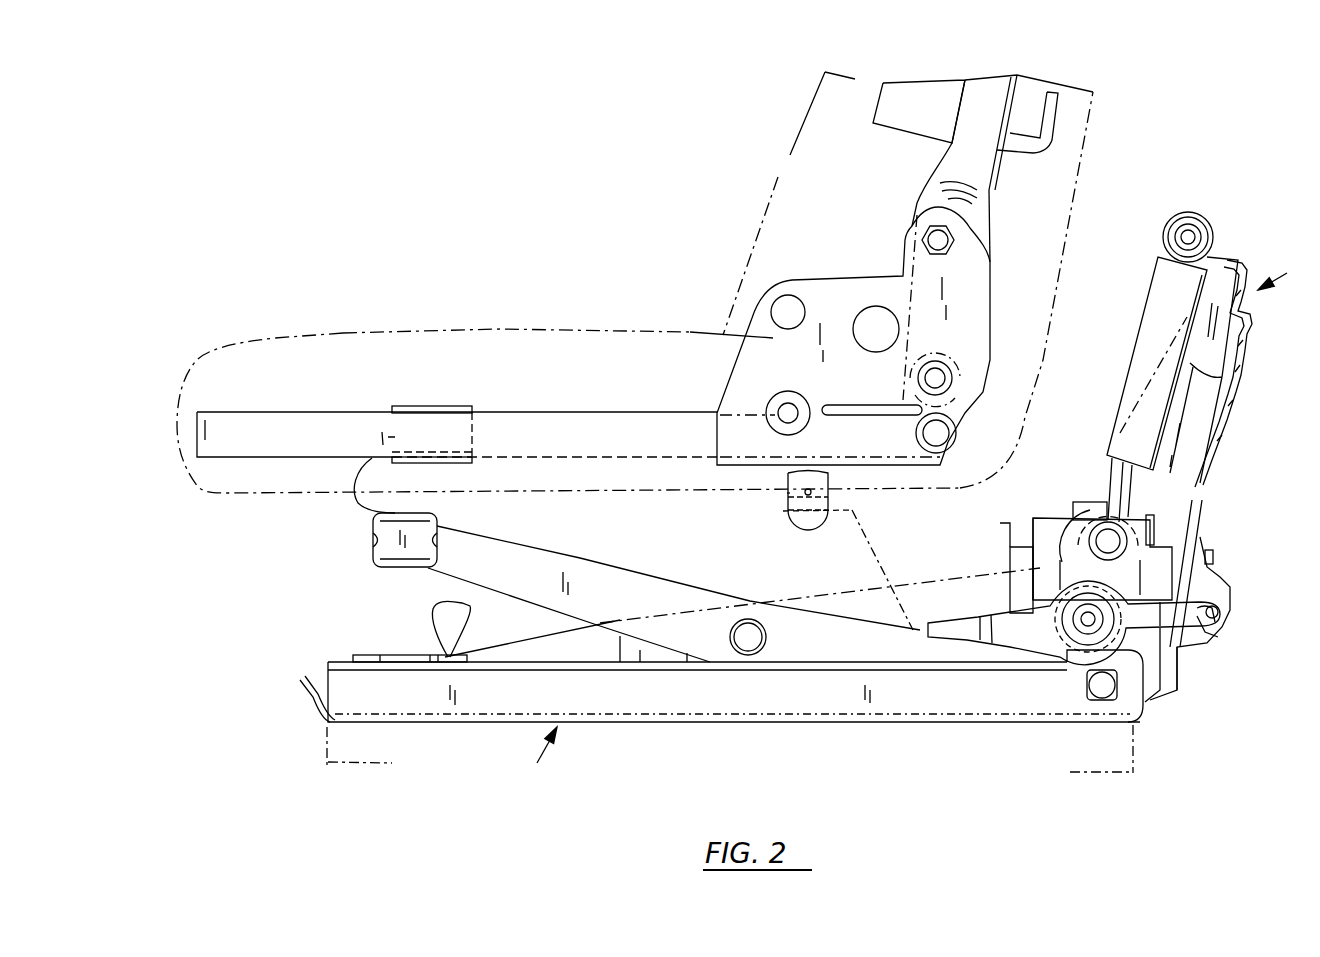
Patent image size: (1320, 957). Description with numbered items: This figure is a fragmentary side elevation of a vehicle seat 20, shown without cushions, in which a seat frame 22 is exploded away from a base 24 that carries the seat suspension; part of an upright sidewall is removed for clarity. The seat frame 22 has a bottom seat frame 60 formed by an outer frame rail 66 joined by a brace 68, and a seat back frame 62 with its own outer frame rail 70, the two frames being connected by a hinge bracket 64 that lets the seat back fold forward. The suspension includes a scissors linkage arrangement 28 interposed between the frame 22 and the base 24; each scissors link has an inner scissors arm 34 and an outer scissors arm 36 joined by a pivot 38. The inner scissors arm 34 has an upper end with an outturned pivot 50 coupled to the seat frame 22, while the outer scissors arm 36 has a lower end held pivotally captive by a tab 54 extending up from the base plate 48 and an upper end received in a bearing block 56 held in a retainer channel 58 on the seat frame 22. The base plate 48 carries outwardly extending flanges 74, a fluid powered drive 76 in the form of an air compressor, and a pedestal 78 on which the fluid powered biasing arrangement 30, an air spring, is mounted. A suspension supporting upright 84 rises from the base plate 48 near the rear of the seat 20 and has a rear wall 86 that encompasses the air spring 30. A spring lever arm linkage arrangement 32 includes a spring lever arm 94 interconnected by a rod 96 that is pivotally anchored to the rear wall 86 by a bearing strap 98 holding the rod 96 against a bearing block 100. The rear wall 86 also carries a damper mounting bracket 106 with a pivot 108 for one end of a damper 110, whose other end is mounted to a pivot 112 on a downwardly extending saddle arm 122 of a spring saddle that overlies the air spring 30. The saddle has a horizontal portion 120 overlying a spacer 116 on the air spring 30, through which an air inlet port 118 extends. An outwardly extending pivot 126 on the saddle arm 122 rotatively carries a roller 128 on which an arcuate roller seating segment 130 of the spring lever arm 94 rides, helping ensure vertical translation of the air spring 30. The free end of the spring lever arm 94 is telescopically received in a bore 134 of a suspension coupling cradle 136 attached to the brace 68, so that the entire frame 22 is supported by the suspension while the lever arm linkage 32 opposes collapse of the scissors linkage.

The vehicle seat 20 is at (527, 285).
The seat frame 22 is at (1100, 143).
The base 24 is at (538, 756).
The scissors linkage arrangement 28 is at (405, 579).
The fluid powered biasing arrangement 30 is at (1010, 597).
The spring lever arm linkage arrangement 32 is at (1222, 610).
The inner scissors arm 34 is at (557, 641).
The outer scissors arm 36 is at (600, 535).
The pivot 38 is at (745, 625).
The base plate 48 is at (857, 703).
The outturned pivot 50 is at (1080, 507).
The tab 54 is at (1133, 706).
The bearing block 56 is at (400, 537).
The retainer channel 58 is at (427, 407).
The bottom seat frame 60 is at (510, 405).
The seat back frame 62 is at (1020, 90).
The hinge bracket 64 is at (850, 273).
The outer frame rail 66 is at (348, 420).
The brace 68 is at (820, 472).
The outer frame rail 70 is at (1003, 103).
The flange 74 is at (777, 667).
The fluid powered drive 76 is at (452, 636).
The pedestal 78 is at (327, 760).
The suspension supporting upright 84 is at (1287, 276).
The rear wall 86 is at (1250, 346).
The spring lever arm 94 is at (1178, 663).
The rod 96 is at (1218, 604).
The bearing strap 98 is at (1222, 583).
The bearing block 100 is at (1202, 634).
The damper mounting bracket 106 is at (1222, 246).
The pivot 108 is at (1192, 235).
The damper 110 is at (1162, 284).
The pivot 112 is at (1182, 513).
The spacer 116 is at (1030, 542).
The air inlet port 118 is at (1107, 512).
The horizontal portion 120 is at (1052, 520).
The saddle arm 122 is at (1018, 560).
The pivot 126 is at (1085, 627).
The roller 128 is at (1068, 643).
The arcuate roller seating segment 130 is at (1060, 575).
The bore 134 is at (783, 511).
The suspension coupling cradle 136 is at (787, 493).